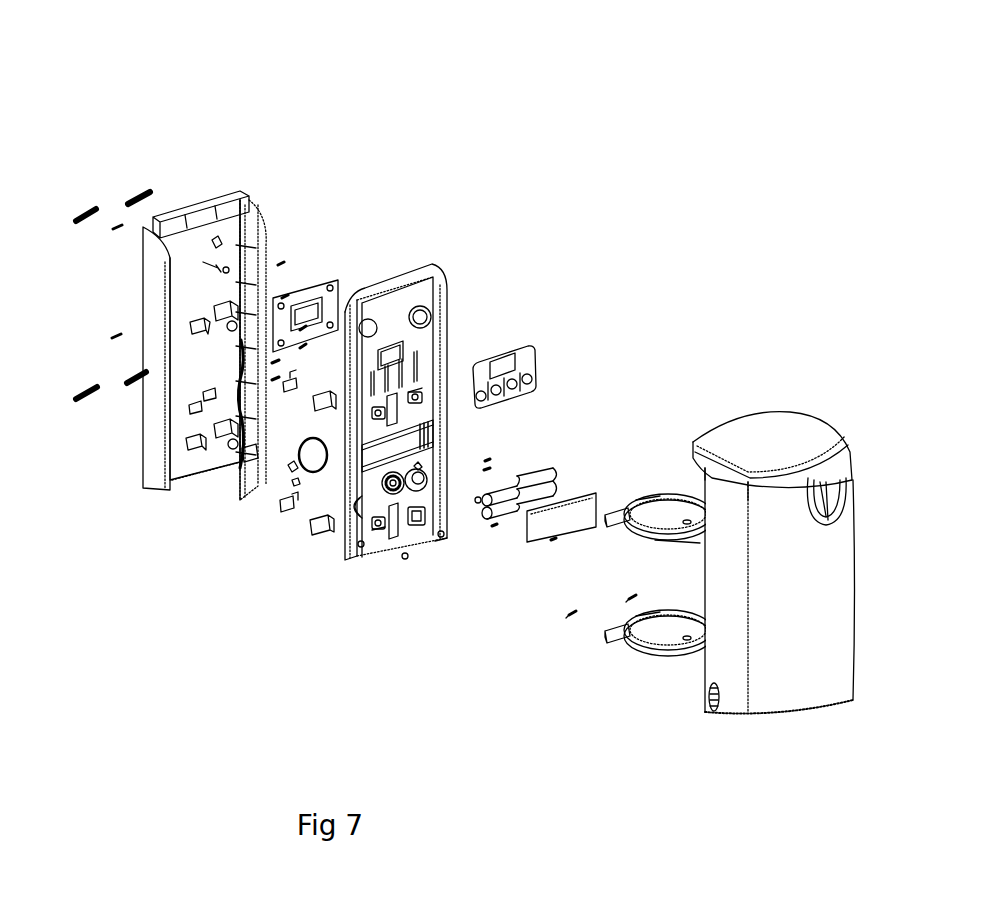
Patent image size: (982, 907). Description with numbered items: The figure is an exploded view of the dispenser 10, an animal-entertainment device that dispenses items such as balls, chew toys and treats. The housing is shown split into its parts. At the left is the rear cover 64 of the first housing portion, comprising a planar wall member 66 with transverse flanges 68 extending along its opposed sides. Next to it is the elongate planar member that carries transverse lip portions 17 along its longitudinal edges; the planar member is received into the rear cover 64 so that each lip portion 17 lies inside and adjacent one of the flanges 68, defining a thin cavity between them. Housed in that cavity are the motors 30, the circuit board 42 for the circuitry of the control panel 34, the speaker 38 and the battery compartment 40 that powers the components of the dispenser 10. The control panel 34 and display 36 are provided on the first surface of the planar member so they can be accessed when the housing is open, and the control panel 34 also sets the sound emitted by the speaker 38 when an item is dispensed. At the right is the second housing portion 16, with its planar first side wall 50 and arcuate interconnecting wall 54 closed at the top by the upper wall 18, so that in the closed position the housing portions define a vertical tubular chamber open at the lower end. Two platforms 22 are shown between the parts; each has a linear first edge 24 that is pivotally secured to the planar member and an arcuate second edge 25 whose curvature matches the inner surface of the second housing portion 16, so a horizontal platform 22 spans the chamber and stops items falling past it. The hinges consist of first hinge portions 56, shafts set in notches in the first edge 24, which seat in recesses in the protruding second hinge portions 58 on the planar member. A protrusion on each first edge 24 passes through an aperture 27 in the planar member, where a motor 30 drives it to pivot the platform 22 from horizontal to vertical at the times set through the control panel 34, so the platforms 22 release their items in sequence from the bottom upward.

The dispenser 10 is at (241, 82).
The second housing portion 16 is at (715, 665).
The lip portions 17 is at (438, 495).
The upper wall 18 is at (743, 440).
The platforms 22 is at (698, 518).
The first edge 24 is at (652, 617).
The arcuate second edge 25 is at (698, 543).
The aperture 27 is at (398, 417).
The motor 30 is at (253, 453).
The control panel 34 is at (537, 373).
The display 36 is at (515, 365).
The speaker 38 is at (306, 458).
The battery compartment 40 is at (408, 448).
The circuit board 42 is at (320, 292).
The first side wall 50 is at (730, 663).
The interconnecting wall 54 is at (830, 602).
The first hinge portion 56 is at (627, 510).
The second hinge portion 58 is at (427, 395).
The rear cover 64 is at (177, 213).
The planar wall member 66 is at (187, 265).
The flanges 68 is at (257, 247).